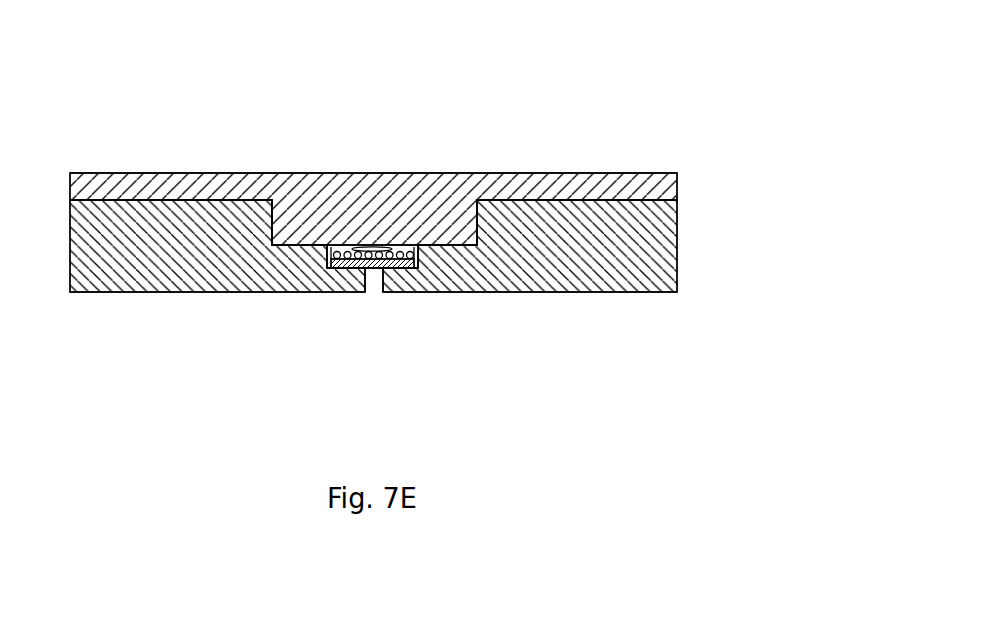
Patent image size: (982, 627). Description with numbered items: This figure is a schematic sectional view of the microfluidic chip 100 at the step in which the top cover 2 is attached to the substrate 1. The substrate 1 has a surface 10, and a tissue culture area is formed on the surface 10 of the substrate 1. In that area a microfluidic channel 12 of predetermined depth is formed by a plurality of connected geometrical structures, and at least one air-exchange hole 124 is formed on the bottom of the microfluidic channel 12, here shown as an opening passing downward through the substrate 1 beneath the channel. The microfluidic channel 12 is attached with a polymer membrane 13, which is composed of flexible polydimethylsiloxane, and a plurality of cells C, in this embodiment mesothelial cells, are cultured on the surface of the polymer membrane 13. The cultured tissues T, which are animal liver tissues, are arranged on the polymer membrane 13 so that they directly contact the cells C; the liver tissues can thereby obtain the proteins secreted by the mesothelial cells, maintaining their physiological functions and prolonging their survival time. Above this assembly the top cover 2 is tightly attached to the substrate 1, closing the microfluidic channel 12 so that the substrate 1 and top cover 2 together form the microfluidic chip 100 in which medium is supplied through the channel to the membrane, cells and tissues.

The surface 10 is at (469, 210).
The microfluidic chip 100 is at (476, 207).
The substrate 1 is at (420, 246).
The top cover 2 is at (677, 178).
The microfluidic channel 12 is at (420, 270).
The air-exchange hole 124 is at (374, 292).
The polymer membrane 13 is at (331, 248).
The cultured tissues T is at (375, 247).
The cells C is at (413, 249).